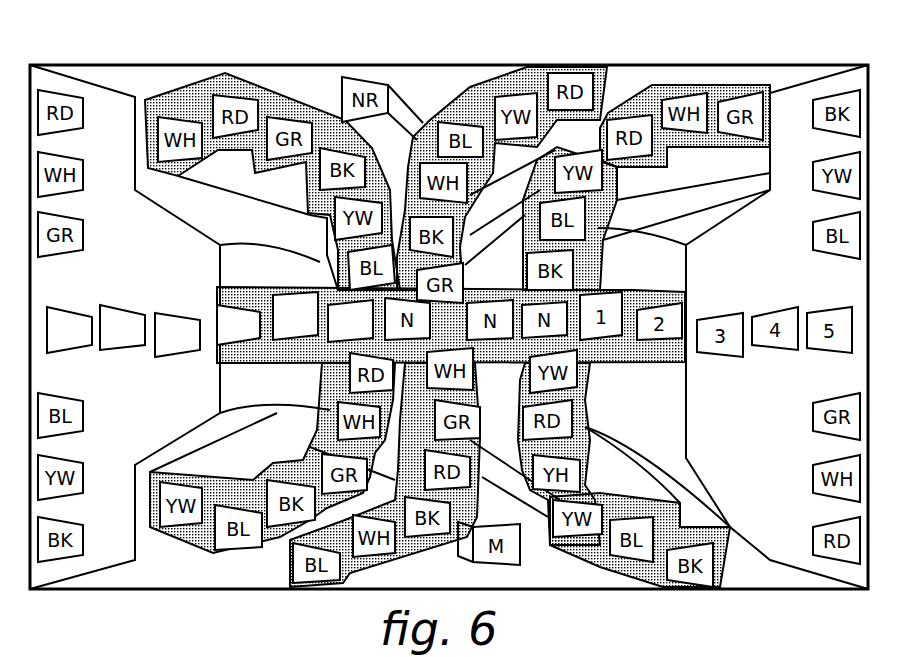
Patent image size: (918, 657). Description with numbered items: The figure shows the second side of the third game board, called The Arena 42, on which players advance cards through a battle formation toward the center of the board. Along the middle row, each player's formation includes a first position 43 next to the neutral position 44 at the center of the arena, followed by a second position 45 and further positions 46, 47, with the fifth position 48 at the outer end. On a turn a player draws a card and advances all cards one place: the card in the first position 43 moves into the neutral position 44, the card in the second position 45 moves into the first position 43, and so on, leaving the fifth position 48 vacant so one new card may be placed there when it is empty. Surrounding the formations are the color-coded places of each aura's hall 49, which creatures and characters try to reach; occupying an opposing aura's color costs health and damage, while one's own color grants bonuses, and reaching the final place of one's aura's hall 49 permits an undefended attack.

The The Arena 42 is at (78, 53).
The first position 43 is at (293, 297).
The neutral position 44 is at (330, 345).
The second position 45 is at (220, 305).
The level-3 tile 46 is at (178, 357).
The level-4 tile 47 is at (125, 300).
The fifth position 48 is at (68, 353).
The aura's hall 49 is at (173, 107).